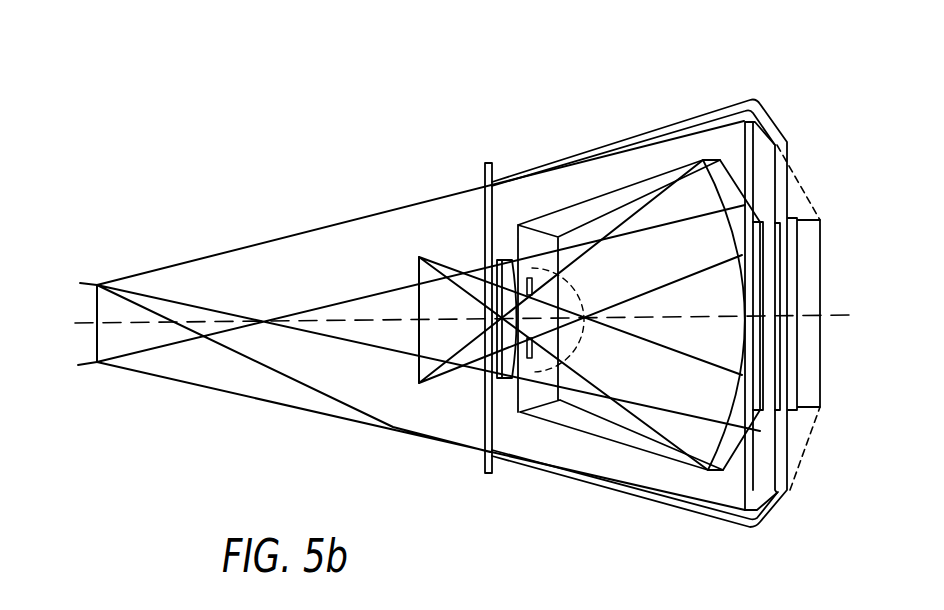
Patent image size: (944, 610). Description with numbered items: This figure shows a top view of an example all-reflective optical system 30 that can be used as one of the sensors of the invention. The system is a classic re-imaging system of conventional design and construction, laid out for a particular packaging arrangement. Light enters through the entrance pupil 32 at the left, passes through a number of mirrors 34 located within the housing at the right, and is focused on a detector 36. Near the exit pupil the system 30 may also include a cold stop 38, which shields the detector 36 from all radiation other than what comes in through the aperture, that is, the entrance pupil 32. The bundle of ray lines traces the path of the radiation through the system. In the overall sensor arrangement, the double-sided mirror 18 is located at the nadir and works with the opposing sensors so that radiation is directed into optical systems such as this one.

The all-reflective optical system 30 is at (638, 78).
The entrance pupil 32 is at (96, 317).
The double-sided mirror 18 is at (270, 370).
The detector 36 is at (419, 278).
The cold stop 38 is at (528, 345).
The mirrors 34 is at (808, 208).